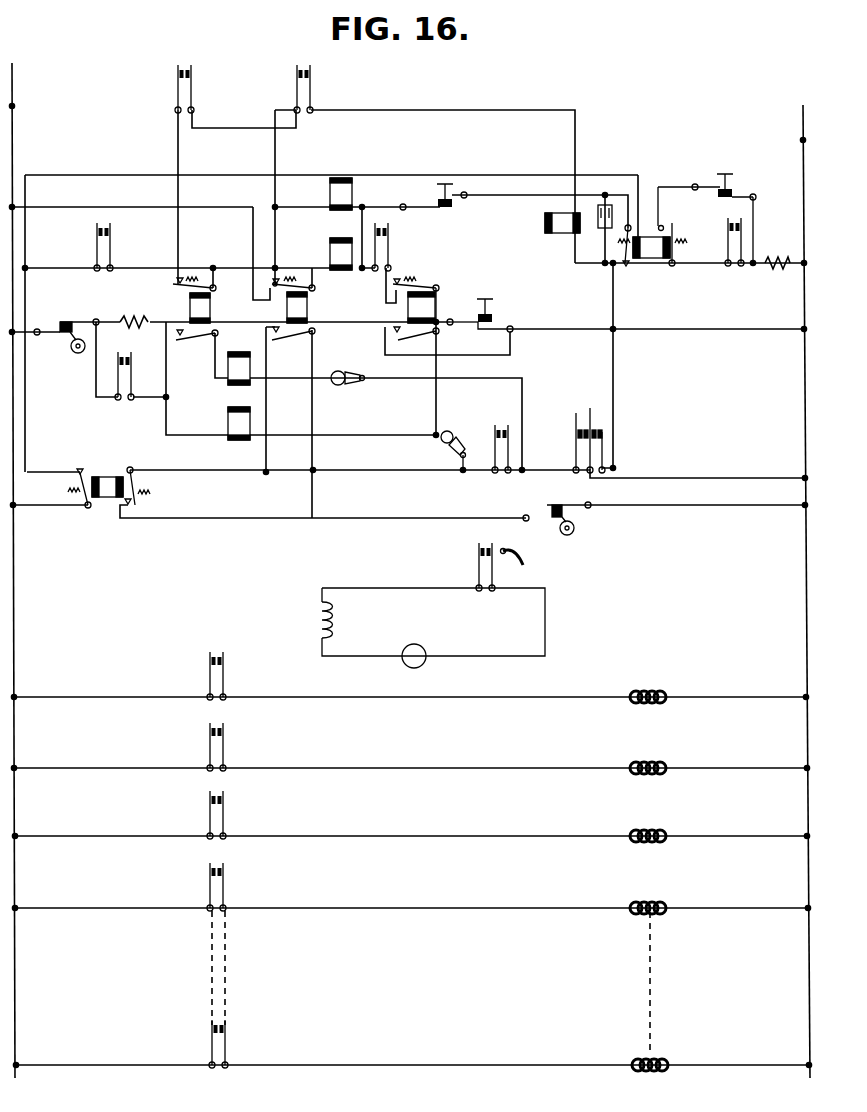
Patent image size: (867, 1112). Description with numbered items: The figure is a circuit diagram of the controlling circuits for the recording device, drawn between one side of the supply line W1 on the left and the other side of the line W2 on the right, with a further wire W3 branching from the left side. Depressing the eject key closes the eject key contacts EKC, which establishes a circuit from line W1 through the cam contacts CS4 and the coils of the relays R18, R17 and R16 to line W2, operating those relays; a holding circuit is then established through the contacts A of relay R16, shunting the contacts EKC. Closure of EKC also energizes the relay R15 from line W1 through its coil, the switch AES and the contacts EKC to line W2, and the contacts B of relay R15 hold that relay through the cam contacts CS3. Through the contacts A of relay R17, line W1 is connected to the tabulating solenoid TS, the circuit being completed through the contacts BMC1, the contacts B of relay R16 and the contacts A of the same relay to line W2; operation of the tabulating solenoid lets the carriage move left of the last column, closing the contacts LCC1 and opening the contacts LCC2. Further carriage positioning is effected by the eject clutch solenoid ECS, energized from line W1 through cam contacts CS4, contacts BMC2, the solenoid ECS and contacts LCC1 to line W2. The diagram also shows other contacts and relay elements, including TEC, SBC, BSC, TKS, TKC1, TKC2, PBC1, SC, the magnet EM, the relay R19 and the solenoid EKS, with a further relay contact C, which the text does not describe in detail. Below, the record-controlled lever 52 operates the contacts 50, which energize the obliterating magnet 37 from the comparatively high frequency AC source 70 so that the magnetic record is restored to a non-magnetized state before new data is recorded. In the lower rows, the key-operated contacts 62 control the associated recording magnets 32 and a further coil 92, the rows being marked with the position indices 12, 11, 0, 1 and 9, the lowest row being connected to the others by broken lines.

The line W1 is at (14, 106).
The line W2 is at (803, 140).
The wire W3 is at (25, 228).
The contact TEC is at (181, 68).
The contact SBC is at (315, 77).
The contact BSC is at (105, 245).
The relay coil TKS is at (352, 192).
The tabulating solenoid TS is at (330, 255).
The contacts BMC1 is at (389, 250).
The contacts BMC2 is at (118, 378).
The switch TKC1 is at (732, 191).
The switch TKC2 is at (447, 211).
The electromagnet EM is at (561, 236).
The relay R19 is at (650, 258).
The relay R18 is at (190, 308).
The relay R17 is at (307, 312).
The relay R16 is at (435, 299).
The relay R15 is at (112, 488).
The contact SC is at (745, 247).
The cam contacts CS4 is at (58, 320).
The cam contacts CS3 is at (576, 519).
The eject key contacts EKC is at (495, 326).
The eject clutch solenoid ECS is at (240, 372).
The relay coil EKS is at (240, 425).
The switch AES is at (451, 446).
The contact PBC1 is at (509, 425).
The contacts LCC1 is at (578, 416).
The contacts LCC2 is at (606, 451).
The contacts A is at (626, 268).
The contacts B is at (668, 228).
The relay contact C is at (272, 268).
The obliterating magnet 37 is at (318, 628).
The contacts 50 is at (478, 566).
The control lever 52 is at (525, 560).
The AC source 70 is at (426, 662).
The contacts 62 is at (222, 1025).
The recording magnet 32 is at (636, 690).
The coil 92 is at (636, 1060).
The hour position 12 is at (462, 687).
The hour position 11 is at (462, 758).
The hour position 0 is at (457, 826).
The hour position 1 is at (457, 898).
The hour position 9 is at (460, 1053).